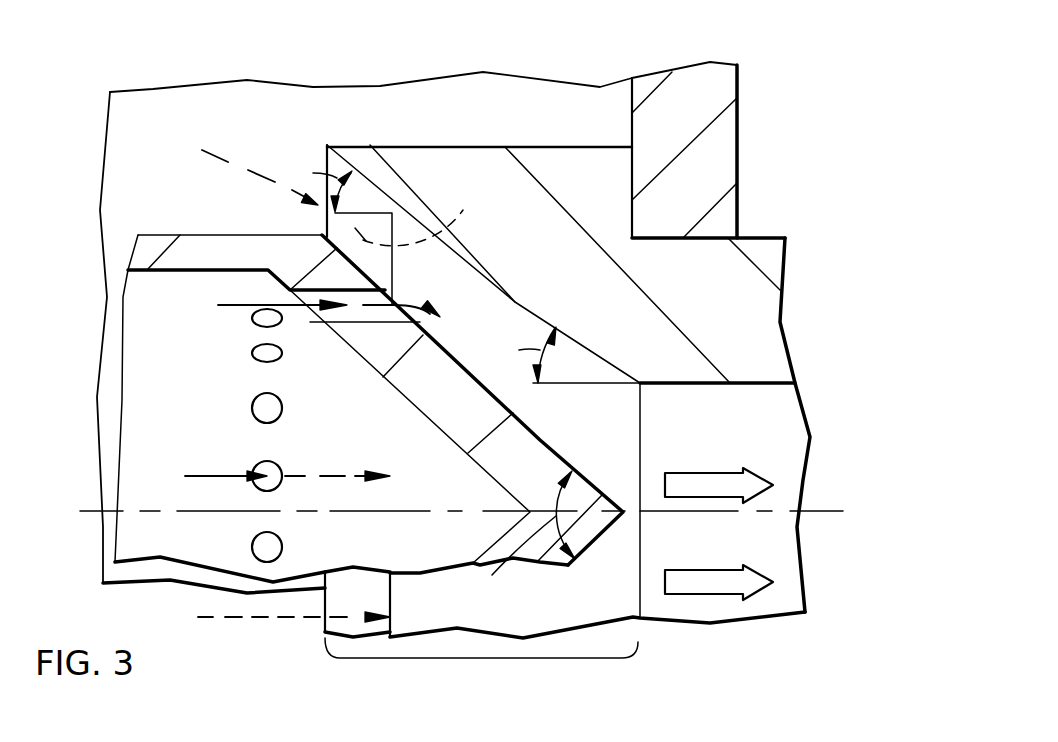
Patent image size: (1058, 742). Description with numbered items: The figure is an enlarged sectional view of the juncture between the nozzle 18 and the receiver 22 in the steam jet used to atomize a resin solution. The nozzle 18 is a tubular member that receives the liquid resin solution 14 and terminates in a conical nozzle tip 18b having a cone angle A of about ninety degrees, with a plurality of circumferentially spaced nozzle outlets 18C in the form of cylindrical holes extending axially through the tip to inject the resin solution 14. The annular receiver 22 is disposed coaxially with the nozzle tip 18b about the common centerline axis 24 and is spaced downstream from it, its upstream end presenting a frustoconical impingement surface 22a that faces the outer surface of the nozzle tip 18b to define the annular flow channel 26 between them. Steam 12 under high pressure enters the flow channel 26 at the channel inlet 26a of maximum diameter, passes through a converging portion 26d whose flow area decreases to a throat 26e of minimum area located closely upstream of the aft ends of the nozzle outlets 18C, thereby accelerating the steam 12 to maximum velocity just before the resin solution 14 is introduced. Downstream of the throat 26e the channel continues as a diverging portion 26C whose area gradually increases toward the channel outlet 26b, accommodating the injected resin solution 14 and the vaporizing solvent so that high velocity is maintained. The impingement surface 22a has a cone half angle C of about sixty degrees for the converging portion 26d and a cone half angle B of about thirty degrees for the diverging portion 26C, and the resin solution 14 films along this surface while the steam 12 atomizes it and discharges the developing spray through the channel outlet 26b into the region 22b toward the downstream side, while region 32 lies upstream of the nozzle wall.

The steam 12 is at (227, 158).
The liquid resin solution 14 is at (207, 476).
The nozzle 18 is at (141, 224).
The nozzle tip 18b is at (553, 443).
The nozzle outlets 18C is at (253, 398).
The receiver 22 is at (477, 130).
The impingement surface 22a is at (520, 302).
The outlet passage 22b is at (773, 425).
The centerline axis 24 is at (818, 512).
The flow channel 26 is at (470, 660).
The channel inlet 26a is at (326, 160).
The channel outlet 26b is at (641, 458).
The diverging portion 26C is at (610, 598).
The converging portion 26d is at (382, 601).
The throat 26e is at (458, 220).
The plenum 32 is at (168, 161).